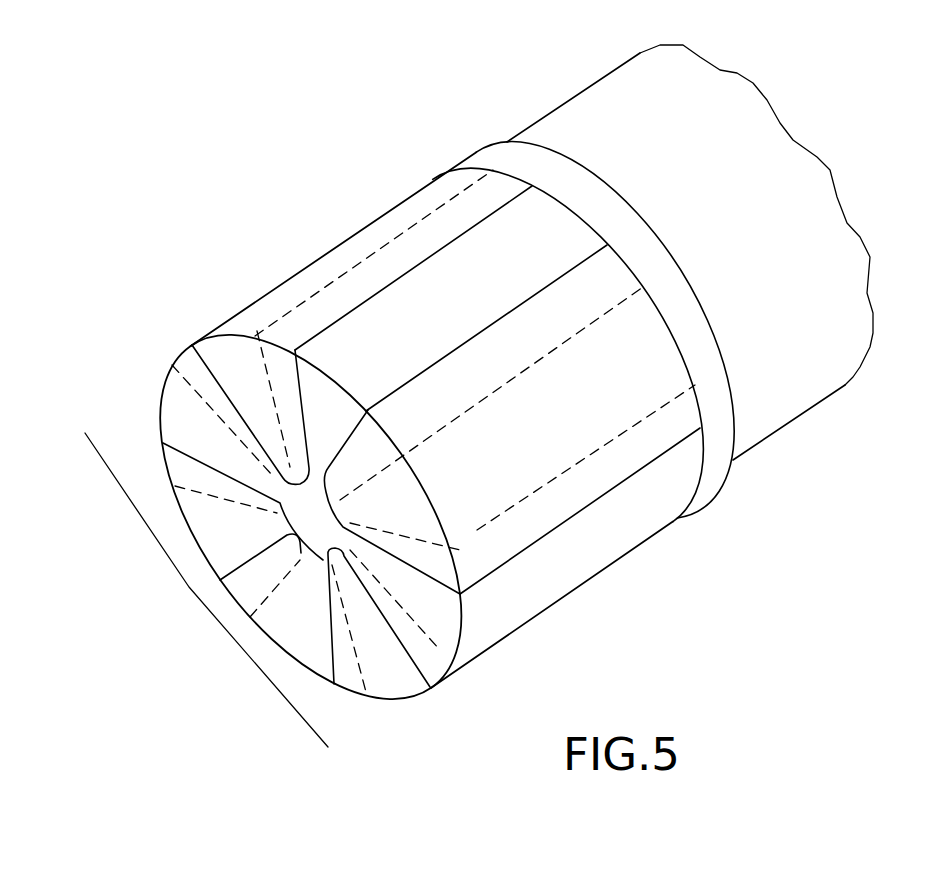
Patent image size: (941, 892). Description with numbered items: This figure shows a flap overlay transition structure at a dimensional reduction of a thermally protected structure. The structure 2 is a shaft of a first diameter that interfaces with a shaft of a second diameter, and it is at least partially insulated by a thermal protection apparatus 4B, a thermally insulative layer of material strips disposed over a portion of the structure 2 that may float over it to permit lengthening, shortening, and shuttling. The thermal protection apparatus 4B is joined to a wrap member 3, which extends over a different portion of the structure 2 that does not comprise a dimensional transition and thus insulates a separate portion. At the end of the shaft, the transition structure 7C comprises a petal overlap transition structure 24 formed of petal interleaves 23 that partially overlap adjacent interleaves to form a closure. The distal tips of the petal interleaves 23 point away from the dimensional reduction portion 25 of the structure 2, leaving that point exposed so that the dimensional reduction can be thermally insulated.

The structure 2 is at (583, 107).
The wrap member 3 is at (470, 155).
The thermal protection apparatus 4B is at (350, 237).
The petal interleaves 23 is at (400, 645).
The petal overlap transition structure 24 is at (208, 610).
The dimensional reduction portion 25 is at (305, 505).
The transition structure 7C is at (384, 745).